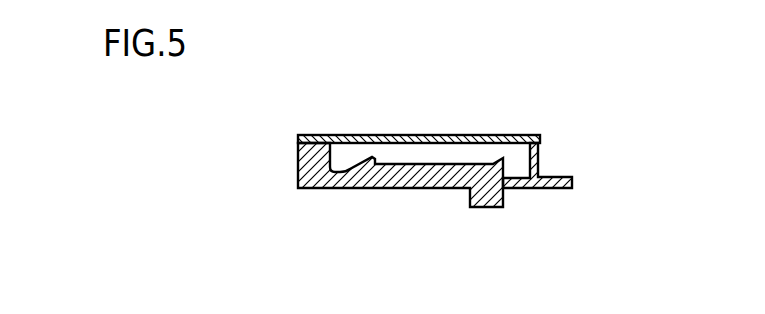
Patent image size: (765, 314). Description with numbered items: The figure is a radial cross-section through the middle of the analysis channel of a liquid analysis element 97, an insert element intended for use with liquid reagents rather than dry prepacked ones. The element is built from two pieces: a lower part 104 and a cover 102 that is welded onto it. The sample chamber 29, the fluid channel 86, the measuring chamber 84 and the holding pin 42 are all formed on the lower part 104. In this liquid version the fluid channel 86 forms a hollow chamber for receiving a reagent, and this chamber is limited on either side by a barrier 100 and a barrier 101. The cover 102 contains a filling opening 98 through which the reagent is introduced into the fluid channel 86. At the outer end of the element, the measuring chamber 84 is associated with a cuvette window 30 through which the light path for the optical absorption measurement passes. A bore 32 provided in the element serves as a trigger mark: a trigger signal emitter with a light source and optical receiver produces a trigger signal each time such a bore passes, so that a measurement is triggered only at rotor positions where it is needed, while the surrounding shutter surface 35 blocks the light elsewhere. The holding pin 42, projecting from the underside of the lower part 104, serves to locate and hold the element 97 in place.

The liquid analysis element 97 is at (270, 139).
The cover 102 is at (307, 135).
The sample chamber 29 is at (346, 163).
The barrier 101 is at (368, 159).
The filling opening 98 is at (427, 135).
The fluid channel 86 is at (465, 150).
The barrier 100 is at (508, 150).
The cuvette window 30 is at (523, 135).
The measuring chamber 84 is at (540, 145).
The bore 32 is at (565, 177).
The shutter surface 35 is at (542, 190).
The holding pin 42 is at (472, 197).
The lower part 104 is at (313, 188).